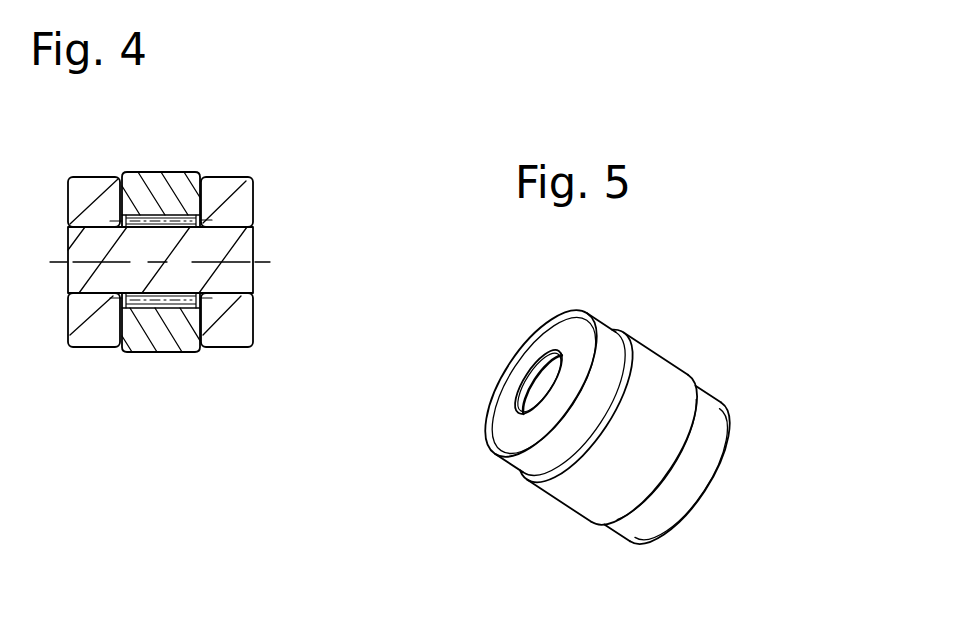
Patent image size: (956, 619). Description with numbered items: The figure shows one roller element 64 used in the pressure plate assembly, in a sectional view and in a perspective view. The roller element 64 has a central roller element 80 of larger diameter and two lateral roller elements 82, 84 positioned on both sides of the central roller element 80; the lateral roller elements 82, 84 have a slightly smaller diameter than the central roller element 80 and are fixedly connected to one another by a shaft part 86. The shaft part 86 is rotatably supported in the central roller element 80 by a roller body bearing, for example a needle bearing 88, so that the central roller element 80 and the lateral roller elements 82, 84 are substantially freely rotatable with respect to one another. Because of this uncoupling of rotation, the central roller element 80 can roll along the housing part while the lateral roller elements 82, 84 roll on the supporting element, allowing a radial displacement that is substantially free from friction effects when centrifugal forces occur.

In FIG. 4, the roller element 64 is at (238, 163).
In FIG. 5, the roller element 64 is at (673, 312).
In FIG. 4, the central roller element 80 is at (176, 333).
In FIG. 5, the central roller element 80 is at (658, 373).
In FIG. 4, the lateral roller element 82 is at (83, 190).
In FIG. 5, the lateral roller element 82 is at (568, 335).
In FIG. 4, the lateral roller element 84 is at (245, 200).
In FIG. 5, the lateral roller element 84 is at (703, 455).
In FIG. 4, the shaft part 86 is at (230, 270).
In FIG. 5, the shaft part 86 is at (533, 386).
In FIG. 4, the needle bearing 88 is at (150, 222).